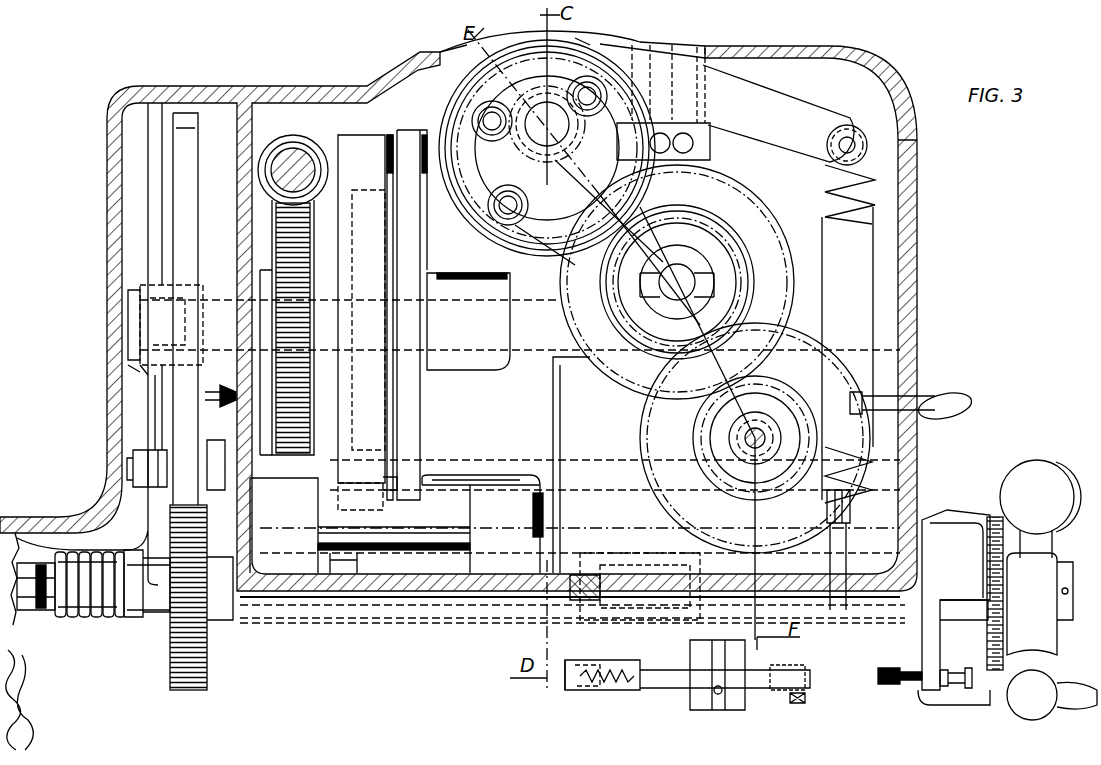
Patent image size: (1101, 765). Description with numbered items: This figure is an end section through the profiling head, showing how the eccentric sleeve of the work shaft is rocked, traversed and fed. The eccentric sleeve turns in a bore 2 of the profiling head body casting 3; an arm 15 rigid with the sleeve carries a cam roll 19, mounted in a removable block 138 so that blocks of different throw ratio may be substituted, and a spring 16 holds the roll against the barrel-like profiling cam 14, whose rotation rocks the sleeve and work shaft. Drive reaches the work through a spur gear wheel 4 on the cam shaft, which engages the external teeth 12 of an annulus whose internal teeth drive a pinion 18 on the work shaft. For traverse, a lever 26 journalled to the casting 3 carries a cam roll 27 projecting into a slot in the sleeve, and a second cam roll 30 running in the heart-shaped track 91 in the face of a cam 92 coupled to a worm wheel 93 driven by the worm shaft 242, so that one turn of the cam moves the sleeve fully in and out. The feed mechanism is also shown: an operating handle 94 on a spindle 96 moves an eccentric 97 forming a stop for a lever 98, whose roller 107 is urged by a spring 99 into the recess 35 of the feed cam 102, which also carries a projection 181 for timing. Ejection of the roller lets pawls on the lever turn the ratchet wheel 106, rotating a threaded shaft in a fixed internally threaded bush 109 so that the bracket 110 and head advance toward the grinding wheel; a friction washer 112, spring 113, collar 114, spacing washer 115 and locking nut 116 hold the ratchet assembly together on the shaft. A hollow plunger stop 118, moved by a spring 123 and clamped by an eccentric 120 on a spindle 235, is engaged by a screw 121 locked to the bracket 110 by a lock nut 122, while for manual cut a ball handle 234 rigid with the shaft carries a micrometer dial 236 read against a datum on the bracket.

The bore 2 is at (576, 38).
The profiling head body casting 3 is at (918, 281).
The spur gear wheel 4 is at (718, 206).
The teeth 12 is at (460, 82).
The profiling cam 14 is at (570, 330).
The arm 15 is at (778, 107).
The spring 16 is at (878, 198).
The pinion 18 is at (510, 70).
The cam roll 19 is at (672, 158).
The lever 26 is at (410, 243).
The cam roll 27 is at (430, 135).
The second cam roll 30 is at (385, 328).
The recess 35 is at (180, 318).
The track 91 is at (376, 444).
The cam 92 is at (362, 148).
The worm wheel 93 is at (372, 405).
The operating handle 94 is at (948, 398).
The spindle 96 is at (500, 477).
The eccentric 97 is at (210, 458).
The lever 98 is at (155, 382).
The spring 99 is at (222, 397).
The feed cam 102 is at (187, 172).
The ratchet wheel 106 is at (170, 642).
The roller 107 is at (160, 331).
The internally threaded bush 109 is at (645, 612).
The bracket 110 is at (975, 512).
The friction washer 112 is at (32, 603).
The spring 113 is at (95, 617).
The collar 114 is at (66, 617).
The spacing washer 115 is at (122, 615).
The locking nut 116 is at (45, 608).
The stop 118 is at (812, 672).
The eccentric 120 is at (718, 650).
The screw 121 is at (903, 680).
The lock nut 122 is at (952, 684).
The spring 123 is at (566, 680).
The removable block 138 is at (625, 212).
The projection 181 is at (180, 115).
The ball handle 234 is at (1040, 478).
The spindle 235 is at (806, 698).
The micrometer dial 236 is at (1040, 660).
The worm shaft 242 is at (285, 160).